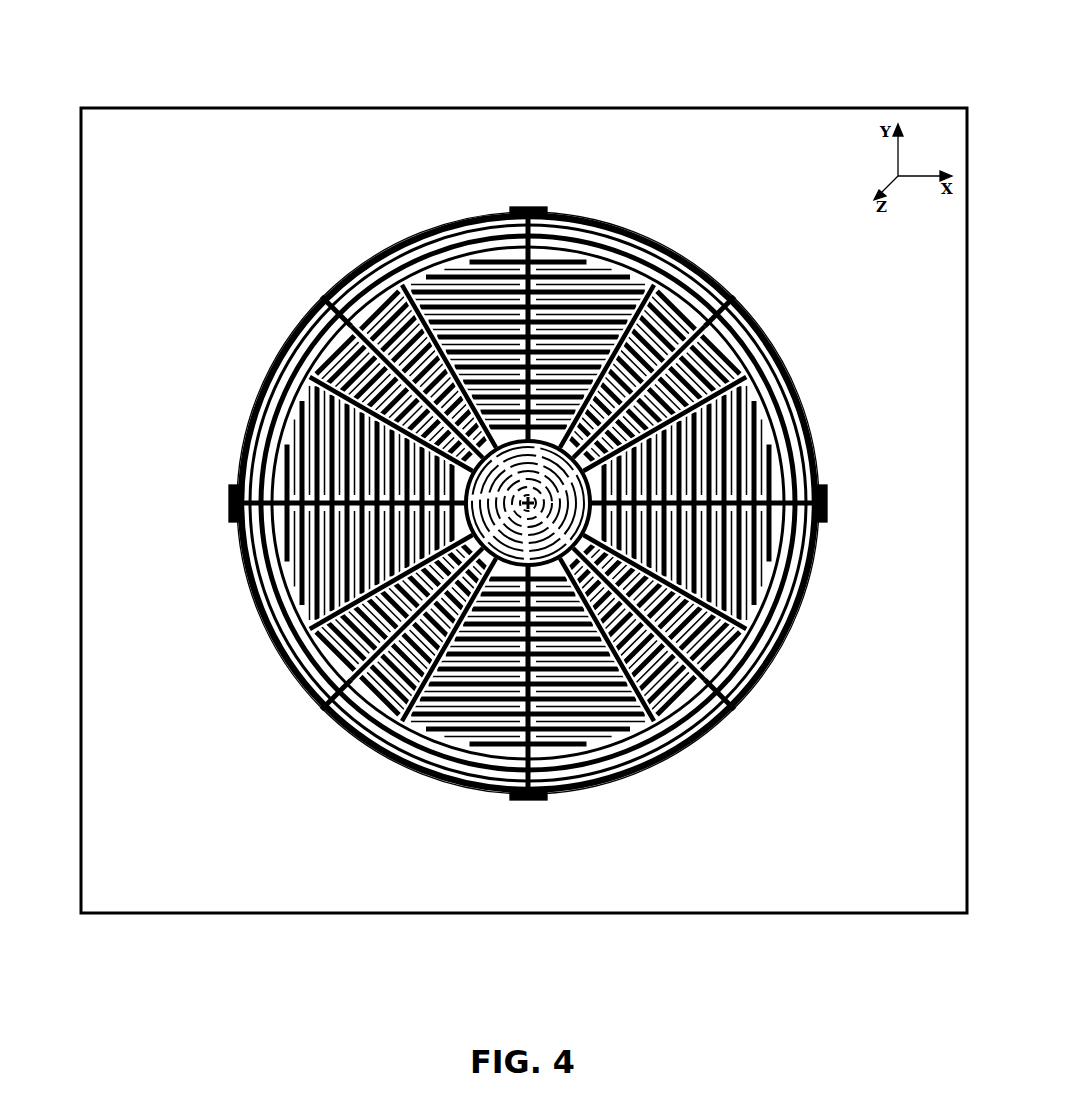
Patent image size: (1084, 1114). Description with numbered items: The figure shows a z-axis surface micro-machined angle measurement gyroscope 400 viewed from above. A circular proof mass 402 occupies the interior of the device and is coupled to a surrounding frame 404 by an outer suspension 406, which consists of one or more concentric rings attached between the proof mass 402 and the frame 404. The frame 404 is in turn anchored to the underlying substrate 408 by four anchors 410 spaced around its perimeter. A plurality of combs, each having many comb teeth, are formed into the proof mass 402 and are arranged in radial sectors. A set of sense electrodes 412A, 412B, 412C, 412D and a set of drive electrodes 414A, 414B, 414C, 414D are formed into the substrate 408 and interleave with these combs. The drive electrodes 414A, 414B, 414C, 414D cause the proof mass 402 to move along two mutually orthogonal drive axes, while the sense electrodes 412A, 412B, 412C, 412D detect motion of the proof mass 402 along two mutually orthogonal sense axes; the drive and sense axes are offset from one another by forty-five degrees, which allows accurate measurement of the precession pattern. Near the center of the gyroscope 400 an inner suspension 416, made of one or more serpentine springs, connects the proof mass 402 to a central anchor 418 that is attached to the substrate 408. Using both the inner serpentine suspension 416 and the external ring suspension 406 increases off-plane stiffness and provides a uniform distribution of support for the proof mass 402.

The z-axis surface micro-machined angle measurement gyroscope 400 is at (545, 44).
The proof mass 402 is at (623, 267).
The frame 404 is at (778, 653).
The outer suspension 406 is at (640, 743).
The substrate 408 is at (668, 913).
The anchors 410 is at (822, 520).
The sense electrode 412A is at (335, 332).
The sense electrode 412B is at (700, 332).
The sense electrode 412C is at (733, 707).
The sense electrode 412D is at (327, 693).
The drive electrode 414A is at (483, 262).
The drive electrode 414B is at (783, 497).
The drive electrode 414C is at (510, 755).
The drive electrode 414D is at (270, 497).
The inner suspension 416 is at (323, 660).
The central anchor 418 is at (528, 503).